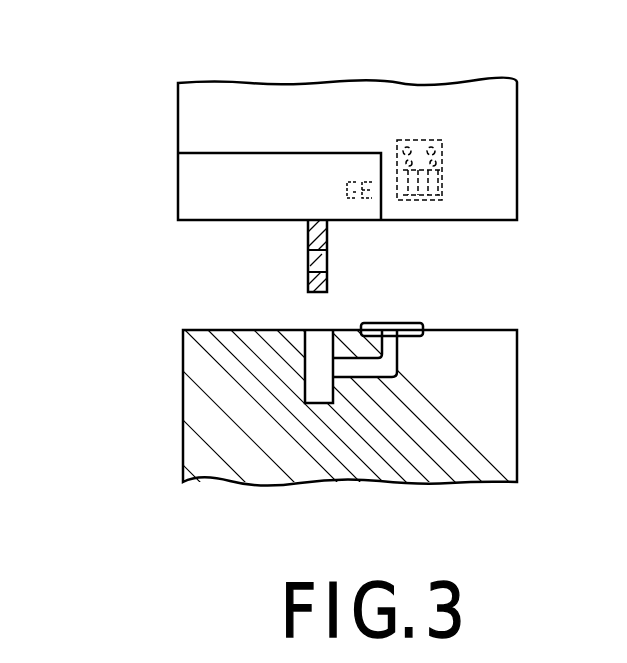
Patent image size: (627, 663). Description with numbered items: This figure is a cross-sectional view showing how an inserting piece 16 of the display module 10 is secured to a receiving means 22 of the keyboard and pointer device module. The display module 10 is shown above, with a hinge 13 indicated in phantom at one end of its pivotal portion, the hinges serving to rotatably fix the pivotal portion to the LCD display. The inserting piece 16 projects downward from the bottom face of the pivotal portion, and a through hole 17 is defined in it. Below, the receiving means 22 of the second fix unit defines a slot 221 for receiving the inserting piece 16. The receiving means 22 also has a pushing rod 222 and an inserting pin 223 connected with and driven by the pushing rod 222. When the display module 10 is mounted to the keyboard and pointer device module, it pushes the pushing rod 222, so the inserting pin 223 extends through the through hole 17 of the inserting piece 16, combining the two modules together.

The display module 10 is at (505, 127).
The hinge 13 is at (441, 187).
The inserting piece 16 is at (315, 220).
The through hole 17 is at (312, 266).
The receiving means 22 is at (357, 308).
The slot 221 is at (312, 334).
The pushing rod 222 is at (416, 323).
The inserting pin 223 is at (367, 370).